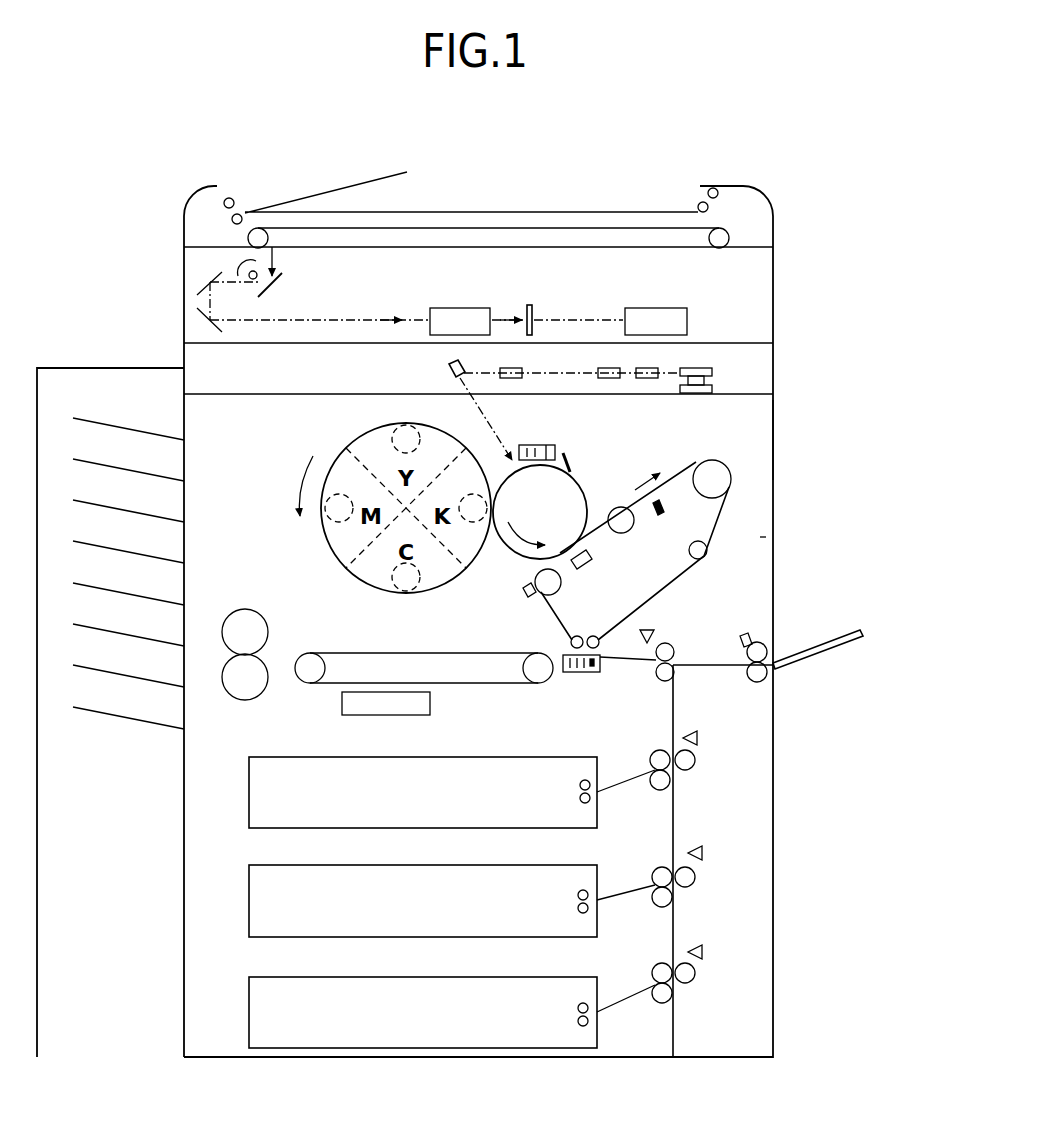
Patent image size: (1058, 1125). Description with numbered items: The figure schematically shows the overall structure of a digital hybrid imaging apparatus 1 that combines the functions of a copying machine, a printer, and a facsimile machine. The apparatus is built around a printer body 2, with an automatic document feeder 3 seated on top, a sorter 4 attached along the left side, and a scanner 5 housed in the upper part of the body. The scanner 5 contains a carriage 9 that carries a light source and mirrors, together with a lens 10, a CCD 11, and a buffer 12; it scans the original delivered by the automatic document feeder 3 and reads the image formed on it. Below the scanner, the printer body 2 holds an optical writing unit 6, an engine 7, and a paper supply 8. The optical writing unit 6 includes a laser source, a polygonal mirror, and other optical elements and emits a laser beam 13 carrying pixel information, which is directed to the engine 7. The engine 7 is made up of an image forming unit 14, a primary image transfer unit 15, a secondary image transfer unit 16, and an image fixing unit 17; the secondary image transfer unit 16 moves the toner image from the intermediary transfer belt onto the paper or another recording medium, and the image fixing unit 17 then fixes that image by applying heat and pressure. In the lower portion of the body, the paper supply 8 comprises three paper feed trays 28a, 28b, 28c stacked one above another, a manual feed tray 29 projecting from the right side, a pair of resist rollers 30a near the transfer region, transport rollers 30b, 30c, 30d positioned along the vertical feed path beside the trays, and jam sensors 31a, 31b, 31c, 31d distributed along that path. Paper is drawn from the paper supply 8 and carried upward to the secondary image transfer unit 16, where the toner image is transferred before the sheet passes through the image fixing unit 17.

The digital hybrid imaging apparatus 1 is at (178, 188).
The printer body 2 is at (779, 449).
The automatic document feeder 3 is at (678, 205).
The sorter 4 is at (97, 363).
The scanner 5 is at (190, 268).
The optical writing unit 6 is at (765, 380).
The engine 7 is at (752, 537).
The paper supply 8 is at (752, 827).
The carriage 9 is at (288, 289).
The lens 10 is at (454, 308).
The CCD 11 is at (531, 305).
The buffer 12 is at (659, 308).
The laser beam 13 is at (488, 418).
The image forming unit 14 is at (594, 466).
The primary image transfer unit 15 is at (692, 457).
The secondary image transfer unit 16 is at (594, 683).
The image fixing unit 17 is at (246, 608).
The paper feed tray 28a is at (300, 757).
The paper feed tray 28b is at (300, 865).
The paper feed tray 28c is at (300, 977).
The manual feed tray 29 is at (836, 645).
The pair of resist rollers 30a is at (675, 645).
The transport roller 30b is at (696, 766).
The transport roller 30c is at (696, 883).
The transport roller 30d is at (696, 979).
The jam sensor 31a is at (654, 630).
The jam sensor 31b is at (700, 738).
The jam sensor 31c is at (705, 853).
The jam sensor 31d is at (705, 952).